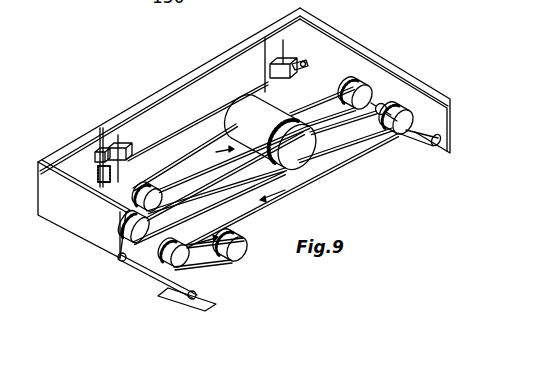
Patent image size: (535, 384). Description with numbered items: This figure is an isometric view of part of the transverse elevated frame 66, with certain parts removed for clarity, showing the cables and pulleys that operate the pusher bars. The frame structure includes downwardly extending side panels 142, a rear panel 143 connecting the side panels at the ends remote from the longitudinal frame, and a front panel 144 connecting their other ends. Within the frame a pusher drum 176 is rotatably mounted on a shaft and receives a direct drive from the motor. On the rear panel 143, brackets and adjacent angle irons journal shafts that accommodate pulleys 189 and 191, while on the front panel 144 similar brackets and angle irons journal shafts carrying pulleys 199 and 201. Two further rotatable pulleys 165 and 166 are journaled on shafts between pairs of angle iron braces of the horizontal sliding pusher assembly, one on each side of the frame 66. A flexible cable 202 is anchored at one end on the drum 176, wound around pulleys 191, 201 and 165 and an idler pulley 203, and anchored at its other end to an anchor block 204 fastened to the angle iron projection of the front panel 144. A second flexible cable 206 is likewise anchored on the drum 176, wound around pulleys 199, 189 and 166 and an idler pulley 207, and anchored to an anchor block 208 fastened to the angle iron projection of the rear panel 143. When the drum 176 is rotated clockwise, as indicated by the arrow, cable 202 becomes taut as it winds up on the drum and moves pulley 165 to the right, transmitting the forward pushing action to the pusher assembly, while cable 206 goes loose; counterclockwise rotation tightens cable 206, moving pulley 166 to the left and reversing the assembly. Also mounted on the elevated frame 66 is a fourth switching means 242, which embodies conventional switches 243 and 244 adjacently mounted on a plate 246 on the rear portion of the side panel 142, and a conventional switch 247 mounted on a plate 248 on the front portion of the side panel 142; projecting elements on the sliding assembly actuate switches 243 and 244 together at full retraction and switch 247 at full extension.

The elevated frame 66 is at (204, 70).
The side panels 142 is at (156, 113).
The rear panel 143 is at (80, 238).
The front panel 144 is at (444, 118).
The rotatable pulley 165 is at (153, 182).
The rotatable pulley 166 is at (246, 247).
The pusher drum 176 is at (274, 112).
The pulley 189 is at (182, 264).
The pulley 191 is at (147, 243).
The pulley 199 is at (401, 138).
The pulley 201 is at (355, 87).
The flexible cable 202 is at (208, 165).
The idler pulley 203 is at (382, 103).
The anchor block 204 is at (437, 148).
The second flexible cable 206 is at (312, 176).
The idler pulley 207 is at (182, 300).
The anchor block 208 is at (122, 263).
The fourth switching means 242 is at (128, 146).
The switch 243 is at (87, 154).
The switch 244 is at (112, 178).
The plate 246 is at (100, 134).
The switch 247 is at (300, 71).
The plate 248 is at (269, 38).